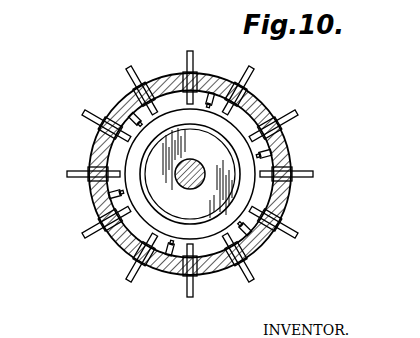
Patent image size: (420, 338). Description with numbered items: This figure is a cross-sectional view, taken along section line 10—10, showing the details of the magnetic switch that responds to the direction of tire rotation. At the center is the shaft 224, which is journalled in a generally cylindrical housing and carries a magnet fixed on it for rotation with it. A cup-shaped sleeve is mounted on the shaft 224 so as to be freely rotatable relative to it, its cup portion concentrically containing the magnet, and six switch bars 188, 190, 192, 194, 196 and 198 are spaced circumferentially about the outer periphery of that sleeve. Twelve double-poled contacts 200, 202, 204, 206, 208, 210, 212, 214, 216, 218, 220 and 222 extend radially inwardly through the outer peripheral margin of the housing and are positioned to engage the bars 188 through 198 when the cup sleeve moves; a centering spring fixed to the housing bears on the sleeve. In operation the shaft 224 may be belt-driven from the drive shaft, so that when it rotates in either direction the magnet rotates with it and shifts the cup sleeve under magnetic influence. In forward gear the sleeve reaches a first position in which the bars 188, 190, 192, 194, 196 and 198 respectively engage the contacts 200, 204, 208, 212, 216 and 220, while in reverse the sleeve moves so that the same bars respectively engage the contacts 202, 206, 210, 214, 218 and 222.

The fluid dispersal device 10 is at (266, 98).
The switch bar 188 is at (215, 94).
The switch bar 190 is at (268, 156).
The switch bar 192 is at (258, 243).
The switch bar 194 is at (166, 272).
The switch bar 196 is at (118, 197).
The switch bar 198 is at (122, 116).
The double-poled contact 200 is at (201, 44).
The double-poled contact 202 is at (255, 70).
The double-poled contact 204 is at (298, 112).
The double-poled contact 206 is at (314, 174).
The double-poled contact 208 is at (299, 237).
The double-poled contact 210 is at (254, 284).
The double-poled contact 212 is at (193, 301).
The double-poled contact 214 is at (132, 283).
The double-poled contact 216 is at (88, 236).
The double-poled contact 218 is at (68, 175).
The double-poled contact 220 is at (85, 115).
The double-poled contact 222 is at (126, 67).
The shaft 224 is at (186, 191).